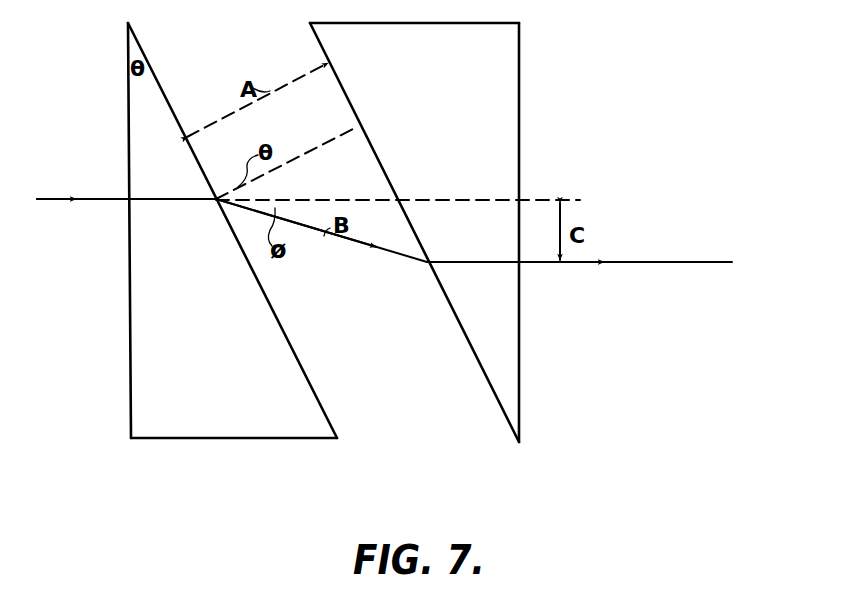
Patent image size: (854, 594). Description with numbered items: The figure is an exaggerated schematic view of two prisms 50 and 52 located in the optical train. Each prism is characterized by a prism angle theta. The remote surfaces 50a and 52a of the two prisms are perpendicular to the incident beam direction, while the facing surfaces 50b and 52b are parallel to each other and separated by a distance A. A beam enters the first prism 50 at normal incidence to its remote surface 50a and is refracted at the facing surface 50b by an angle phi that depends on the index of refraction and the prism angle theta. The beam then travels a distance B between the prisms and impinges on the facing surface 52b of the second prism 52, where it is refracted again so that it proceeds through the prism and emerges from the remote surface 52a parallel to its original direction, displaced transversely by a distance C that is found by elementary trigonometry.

The prism 50 is at (215, 257).
The remote surface 50a is at (131, 355).
The facing surface 50b is at (300, 362).
The prism 52 is at (441, 232).
The remote surface 52a is at (519, 193).
The facing surface 52b is at (482, 372).